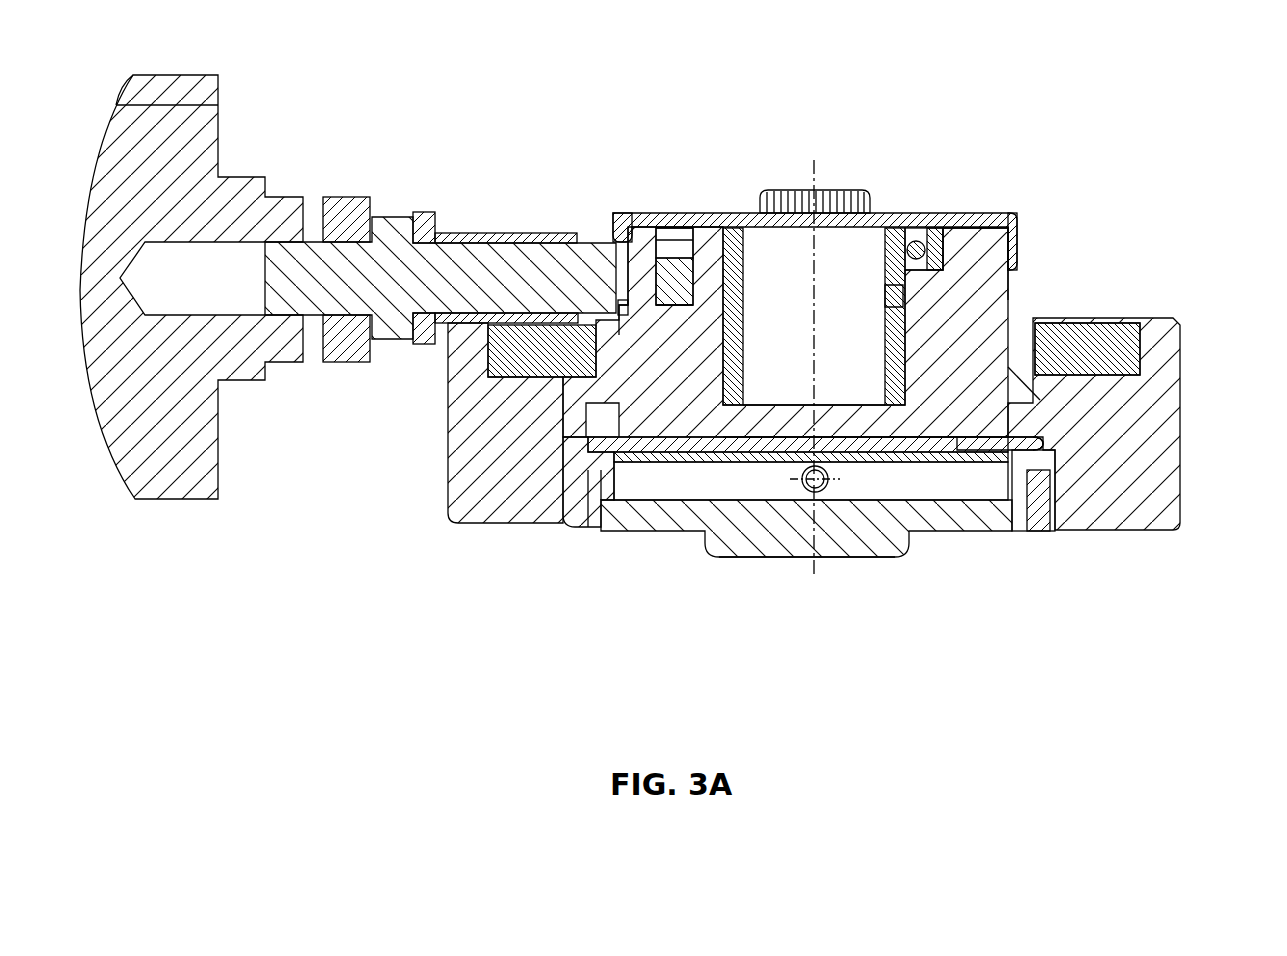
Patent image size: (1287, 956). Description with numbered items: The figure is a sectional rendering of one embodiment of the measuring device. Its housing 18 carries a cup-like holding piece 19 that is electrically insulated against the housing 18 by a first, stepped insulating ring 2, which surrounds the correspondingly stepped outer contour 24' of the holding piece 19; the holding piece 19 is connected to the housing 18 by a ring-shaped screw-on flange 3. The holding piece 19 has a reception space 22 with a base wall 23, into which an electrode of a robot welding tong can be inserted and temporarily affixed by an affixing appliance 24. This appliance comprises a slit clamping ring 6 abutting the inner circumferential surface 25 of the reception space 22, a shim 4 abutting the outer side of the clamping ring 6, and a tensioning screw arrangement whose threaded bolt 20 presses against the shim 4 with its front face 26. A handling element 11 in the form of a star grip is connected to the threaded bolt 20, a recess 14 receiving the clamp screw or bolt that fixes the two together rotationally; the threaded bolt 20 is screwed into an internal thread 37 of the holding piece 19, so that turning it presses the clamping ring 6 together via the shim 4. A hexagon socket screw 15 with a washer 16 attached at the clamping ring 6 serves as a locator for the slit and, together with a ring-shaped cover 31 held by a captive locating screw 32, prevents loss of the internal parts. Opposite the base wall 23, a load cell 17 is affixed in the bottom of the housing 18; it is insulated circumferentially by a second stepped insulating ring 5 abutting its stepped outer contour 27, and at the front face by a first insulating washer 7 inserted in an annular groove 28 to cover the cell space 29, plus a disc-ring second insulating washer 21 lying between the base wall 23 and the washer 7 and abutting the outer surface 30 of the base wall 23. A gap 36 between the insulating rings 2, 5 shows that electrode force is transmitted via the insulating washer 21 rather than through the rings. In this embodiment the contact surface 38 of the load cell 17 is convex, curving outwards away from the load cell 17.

The insulating ring 2 is at (616, 320).
The screw-on flange 3 is at (518, 358).
The shim 4 is at (703, 520).
The insulating ring 5 is at (570, 488).
The clamping ring 6 is at (733, 257).
The insulating washer 7 is at (943, 456).
The handling element 11 is at (205, 131).
The recess 14 is at (314, 212).
The hexagon socket screw 15 is at (921, 252).
The washer 16 is at (911, 238).
The load cell 17 is at (733, 540).
The housing 18 is at (455, 353).
The holding piece 19 is at (987, 243).
The threaded bolt 20 is at (360, 300).
The insulating washer 21 is at (1040, 438).
The reception space 22 is at (874, 250).
The base wall 23 is at (858, 421).
The affixing appliance 24 is at (815, 174).
The outer contour 24' is at (673, 212).
The inner circumferential surface 25 is at (900, 303).
The front face 26 is at (699, 268).
The outer contour 27 is at (1045, 471).
The groove 28 is at (997, 452).
The cell space 29 is at (893, 484).
The outer surface 30 is at (673, 310).
The cover 31 is at (634, 223).
The locating screw 32 is at (830, 200).
The gap 36 is at (1042, 445).
The internal thread 37 is at (707, 333).
The contact surface 38 is at (762, 558).